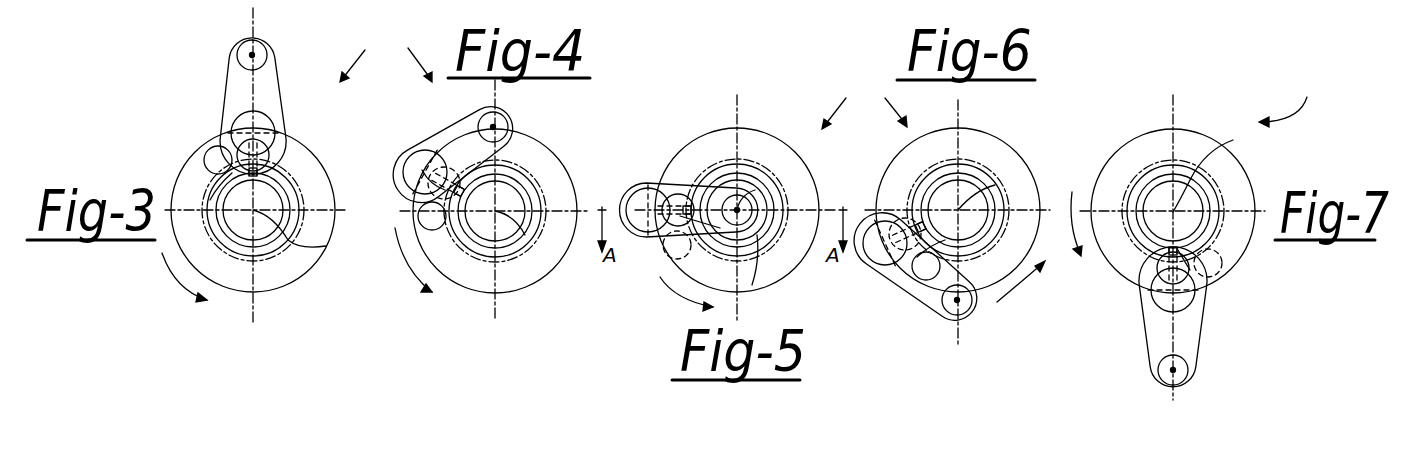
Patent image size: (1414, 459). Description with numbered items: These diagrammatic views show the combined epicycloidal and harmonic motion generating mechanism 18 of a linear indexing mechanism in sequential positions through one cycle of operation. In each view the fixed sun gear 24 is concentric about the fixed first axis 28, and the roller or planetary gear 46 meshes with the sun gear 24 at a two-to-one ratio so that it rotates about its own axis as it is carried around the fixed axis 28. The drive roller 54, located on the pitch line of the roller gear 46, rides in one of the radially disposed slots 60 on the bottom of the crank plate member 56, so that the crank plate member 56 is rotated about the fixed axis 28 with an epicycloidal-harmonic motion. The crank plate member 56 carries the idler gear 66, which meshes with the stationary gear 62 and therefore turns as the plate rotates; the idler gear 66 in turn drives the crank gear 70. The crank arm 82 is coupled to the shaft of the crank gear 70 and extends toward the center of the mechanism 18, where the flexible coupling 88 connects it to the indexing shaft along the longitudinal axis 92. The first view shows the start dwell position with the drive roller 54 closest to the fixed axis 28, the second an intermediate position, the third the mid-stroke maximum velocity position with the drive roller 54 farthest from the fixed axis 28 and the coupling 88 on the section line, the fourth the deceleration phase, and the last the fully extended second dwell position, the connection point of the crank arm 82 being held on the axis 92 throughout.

In FIG. 3, the combined epicycloidal and harmonic motion generating mechanism 18 is at (352, 66).
In FIG. 4, the combined epicycloidal and harmonic motion generating mechanism 18 is at (403, 55).
In FIG. 5, the combined epicycloidal and harmonic motion generating mechanism 18 is at (834, 113).
In FIG. 6, the combined epicycloidal and harmonic motion generating mechanism 18 is at (878, 105).
In FIG. 7, the combined epicycloidal and harmonic motion generating mechanism 18 is at (1283, 99).
In FIG. 3, the fixed sun gear 24 is at (287, 180).
In FIG. 4, the fixed sun gear 24 is at (523, 233).
In FIG. 5, the fixed sun gear 24 is at (768, 177).
In FIG. 6, the fixed sun gear 24 is at (1000, 203).
In FIG. 7, the fixed sun gear 24 is at (1178, 170).
In FIG. 3, the fixed first axis 28 is at (326, 246).
In FIG. 4, the fixed first axis 28 is at (500, 210).
In FIG. 5, the fixed first axis 28 is at (628, 190).
In FIG. 6, the fixed first axis 28 is at (962, 208).
In FIG. 7, the fixed first axis 28 is at (1219, 165).
In FIG. 3, the roller or planetary gear 46 is at (267, 148).
In FIG. 4, the roller or planetary gear 46 is at (444, 183).
In FIG. 5, the roller or planetary gear 46 is at (679, 194).
In FIG. 6, the roller or planetary gear 46 is at (903, 218).
In FIG. 7, the roller or planetary gear 46 is at (1158, 273).
In FIG. 3, the drive roller 54 is at (232, 173).
In FIG. 4, the drive roller 54 is at (422, 170).
In FIG. 5, the drive roller 54 is at (680, 216).
In FIG. 6, the drive roller 54 is at (917, 257).
In FIG. 7, the drive roller 54 is at (1178, 250).
In FIG. 3, the crank plate member 56 is at (295, 282).
In FIG. 4, the crank plate member 56 is at (452, 280).
In FIG. 5, the crank plate member 56 is at (803, 256).
In FIG. 6, the crank plate member 56 is at (927, 138).
In FIG. 7, the crank plate member 56 is at (1143, 141).
In FIG. 3, the radially disposed slots 60 is at (246, 148).
In FIG. 4, the radially disposed slots 60 is at (463, 195).
In FIG. 5, the radially disposed slots 60 is at (700, 200).
In FIG. 6, the radially disposed slots 60 is at (922, 225).
In FIG. 7, the radially disposed slots 60 is at (1168, 258).
In FIG. 3, the stationary gear 62 is at (248, 262).
In FIG. 4, the stationary gear 62 is at (507, 262).
In FIG. 5, the stationary gear 62 is at (772, 178).
In FIG. 6, the stationary gear 62 is at (968, 162).
In FIG. 7, the stationary gear 62 is at (1178, 168).
In FIG. 3, the idler gear 66 is at (206, 153).
In FIG. 4, the idler gear 66 is at (418, 218).
In FIG. 5, the idler gear 66 is at (678, 259).
In FIG. 6, the idler gear 66 is at (928, 280).
In FIG. 7, the idler gear 66 is at (1222, 265).
In FIG. 3, the crank gear 70 is at (264, 114).
In FIG. 4, the crank gear 70 is at (426, 150).
In FIG. 5, the crank gear 70 is at (653, 184).
In FIG. 6, the crank gear 70 is at (870, 260).
In FIG. 7, the crank gear 70 is at (1203, 305).
In FIG. 3, the crank arm 82 is at (227, 77).
In FIG. 4, the crank arm 82 is at (462, 118).
In FIG. 5, the crank arm 82 is at (752, 285).
In FIG. 6, the crank arm 82 is at (928, 310).
In FIG. 7, the crank arm 82 is at (1198, 356).
In FIG. 3, the flexible coupling 88 is at (266, 50).
In FIG. 4, the flexible coupling 88 is at (506, 118).
In FIG. 5, the flexible coupling 88 is at (752, 207).
In FIG. 6, the flexible coupling 88 is at (970, 311).
In FIG. 7, the flexible coupling 88 is at (1158, 372).
In FIG. 3, the longitudinal axis of the indexing shaft 92 is at (257, 313).
In FIG. 4, the longitudinal axis of the indexing shaft 92 is at (495, 300).
In FIG. 6, the longitudinal axis of the indexing shaft 92 is at (960, 125).
In FIG. 7, the longitudinal axis of the indexing shaft 92 is at (1175, 108).